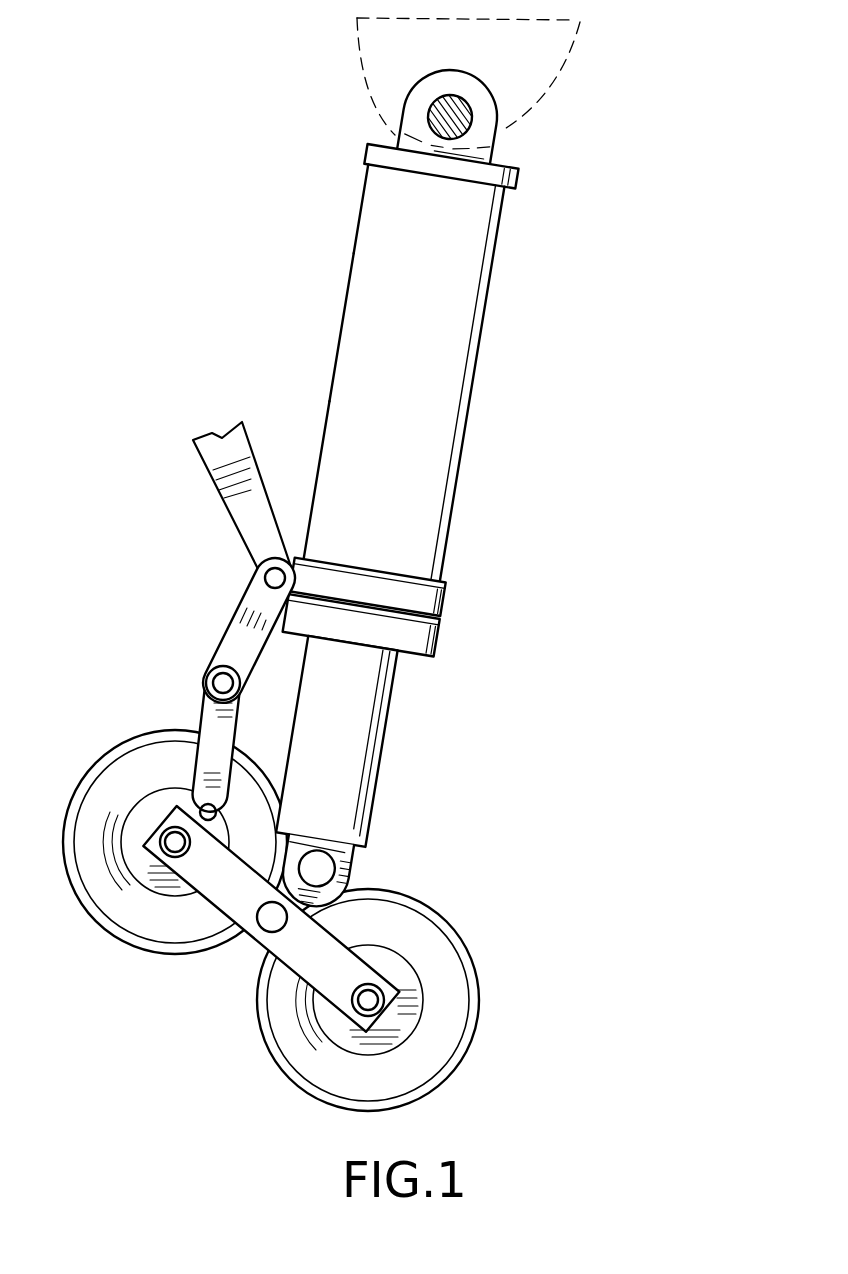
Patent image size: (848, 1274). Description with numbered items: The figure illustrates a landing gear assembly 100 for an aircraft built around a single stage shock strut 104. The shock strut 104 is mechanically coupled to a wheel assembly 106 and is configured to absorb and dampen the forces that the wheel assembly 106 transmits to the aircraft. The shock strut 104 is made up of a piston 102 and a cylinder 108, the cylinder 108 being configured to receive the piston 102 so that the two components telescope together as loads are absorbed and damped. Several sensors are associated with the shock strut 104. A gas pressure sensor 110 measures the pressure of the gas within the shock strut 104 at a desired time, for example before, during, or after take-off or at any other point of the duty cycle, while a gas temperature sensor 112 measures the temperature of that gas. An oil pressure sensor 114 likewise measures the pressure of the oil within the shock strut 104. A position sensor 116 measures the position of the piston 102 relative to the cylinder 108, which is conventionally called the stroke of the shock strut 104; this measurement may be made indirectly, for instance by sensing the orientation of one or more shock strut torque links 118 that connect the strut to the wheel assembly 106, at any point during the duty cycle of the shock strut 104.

The landing gear assembly 100 is at (394, 564).
The piston 102 is at (363, 785).
The shock strut 104 is at (399, 397).
The wheel assembly 106 is at (460, 948).
The cylinder 108 is at (428, 475).
The gas pressure sensor 110 is at (360, 208).
The gas temperature sensor 112 is at (367, 272).
The oil pressure sensor 114 is at (355, 340).
The position sensor 116 is at (397, 660).
The shock strut torque links 118 is at (210, 673).